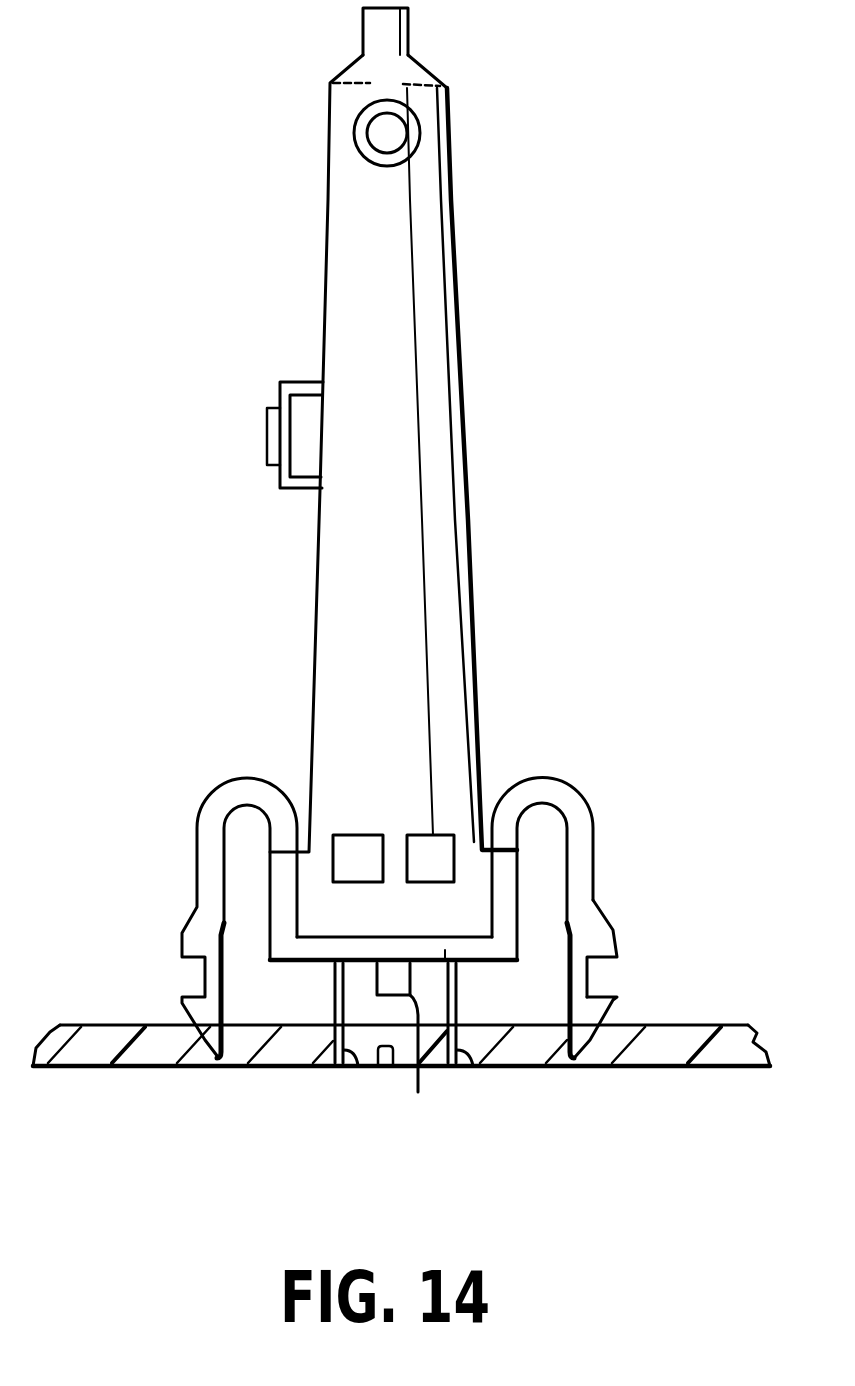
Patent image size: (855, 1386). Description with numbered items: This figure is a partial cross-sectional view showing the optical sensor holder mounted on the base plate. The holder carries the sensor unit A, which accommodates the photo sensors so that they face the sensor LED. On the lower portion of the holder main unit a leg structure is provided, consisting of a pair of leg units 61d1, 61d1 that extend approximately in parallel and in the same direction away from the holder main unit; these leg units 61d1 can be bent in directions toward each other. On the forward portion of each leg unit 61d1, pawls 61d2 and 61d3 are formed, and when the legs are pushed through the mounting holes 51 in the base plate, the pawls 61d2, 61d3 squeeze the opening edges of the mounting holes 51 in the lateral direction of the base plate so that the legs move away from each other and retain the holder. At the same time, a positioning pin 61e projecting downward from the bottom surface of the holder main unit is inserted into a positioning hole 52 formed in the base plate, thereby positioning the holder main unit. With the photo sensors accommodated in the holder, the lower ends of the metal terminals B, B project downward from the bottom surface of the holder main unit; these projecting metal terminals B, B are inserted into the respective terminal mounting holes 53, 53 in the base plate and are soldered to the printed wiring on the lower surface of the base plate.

The sensor unit A is at (406, 127).
The metal terminals B is at (330, 997).
The mounting holes 51 is at (212, 1062).
The positioning hole 52 is at (390, 1068).
The terminal mounting holes 53 is at (358, 1068).
The leg units 61d1 is at (593, 823).
The pawl 61d2 is at (617, 932).
The pawl 61d3 is at (612, 1007).
The positioning pin 61e is at (419, 1054).